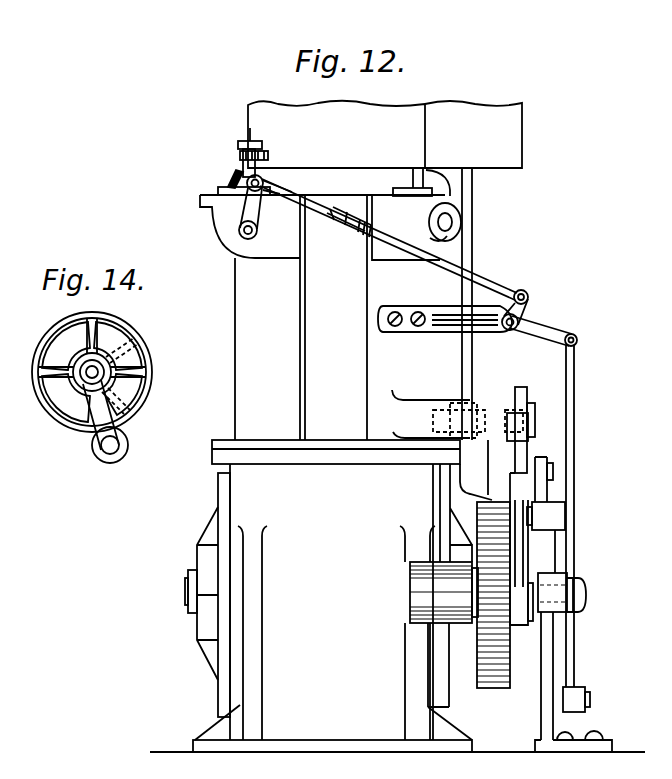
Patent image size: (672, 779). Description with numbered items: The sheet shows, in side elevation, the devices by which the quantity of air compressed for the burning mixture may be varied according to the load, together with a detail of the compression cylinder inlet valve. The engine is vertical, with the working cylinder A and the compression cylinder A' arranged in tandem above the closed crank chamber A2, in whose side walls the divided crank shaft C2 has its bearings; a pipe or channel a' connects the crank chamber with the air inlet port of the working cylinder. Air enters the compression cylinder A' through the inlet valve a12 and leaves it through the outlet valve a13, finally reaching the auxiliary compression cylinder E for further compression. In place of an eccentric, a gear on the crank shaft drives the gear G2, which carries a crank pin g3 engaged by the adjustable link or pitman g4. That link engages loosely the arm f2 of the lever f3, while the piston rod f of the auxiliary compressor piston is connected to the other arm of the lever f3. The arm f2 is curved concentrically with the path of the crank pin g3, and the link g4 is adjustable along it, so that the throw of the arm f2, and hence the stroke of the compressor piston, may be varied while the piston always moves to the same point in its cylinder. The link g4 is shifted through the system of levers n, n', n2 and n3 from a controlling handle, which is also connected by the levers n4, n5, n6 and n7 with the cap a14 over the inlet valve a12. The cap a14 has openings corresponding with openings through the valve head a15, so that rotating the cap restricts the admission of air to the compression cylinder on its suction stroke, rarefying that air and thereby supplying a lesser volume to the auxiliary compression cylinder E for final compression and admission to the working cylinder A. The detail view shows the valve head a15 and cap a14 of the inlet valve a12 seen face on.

In FIG. 12, the working cylinder A is at (336, 134).
In FIG. 12, the auxiliary compression cylinder E is at (473, 134).
In FIG. 12, the cap a14 is at (242, 172).
In FIG. 14, the cap a14 is at (97, 332).
In FIG. 12, the valve head a15 is at (228, 183).
In FIG. 14, the valve head a15 is at (128, 345).
In FIG. 12, the lever n7 is at (250, 200).
In FIG. 12, the inlet valve a12 is at (322, 226).
In FIG. 14, the inlet valve a12 is at (96, 373).
In FIG. 12, the compression cylinder A' is at (267, 317).
In FIG. 12, the pipe or channel a' is at (336, 317).
In FIG. 12, the outlet valve a13 is at (413, 176).
In FIG. 12, the lever n6 is at (320, 210).
In FIG. 12, the piston rod f is at (473, 254).
In FIG. 12, the lever n5 is at (544, 331).
In FIG. 12, the lever n4 is at (575, 465).
In FIG. 12, the lever f3 is at (491, 405).
In FIG. 12, the arm f2 is at (525, 396).
In FIG. 12, the lever n3 is at (541, 466).
In FIG. 12, the adjustable link or pitman g4 is at (512, 497).
In FIG. 12, the gear G2 is at (496, 683).
In FIG. 12, the crank pin g3 is at (531, 623).
In FIG. 12, the crank chamber A2 is at (332, 602).
In FIG. 12, the crank shaft C2 is at (190, 586).
In FIG. 12, the lever n2 is at (560, 564).
In FIG. 12, the lever n' is at (573, 662).
In FIG. 12, the lever n is at (582, 685).